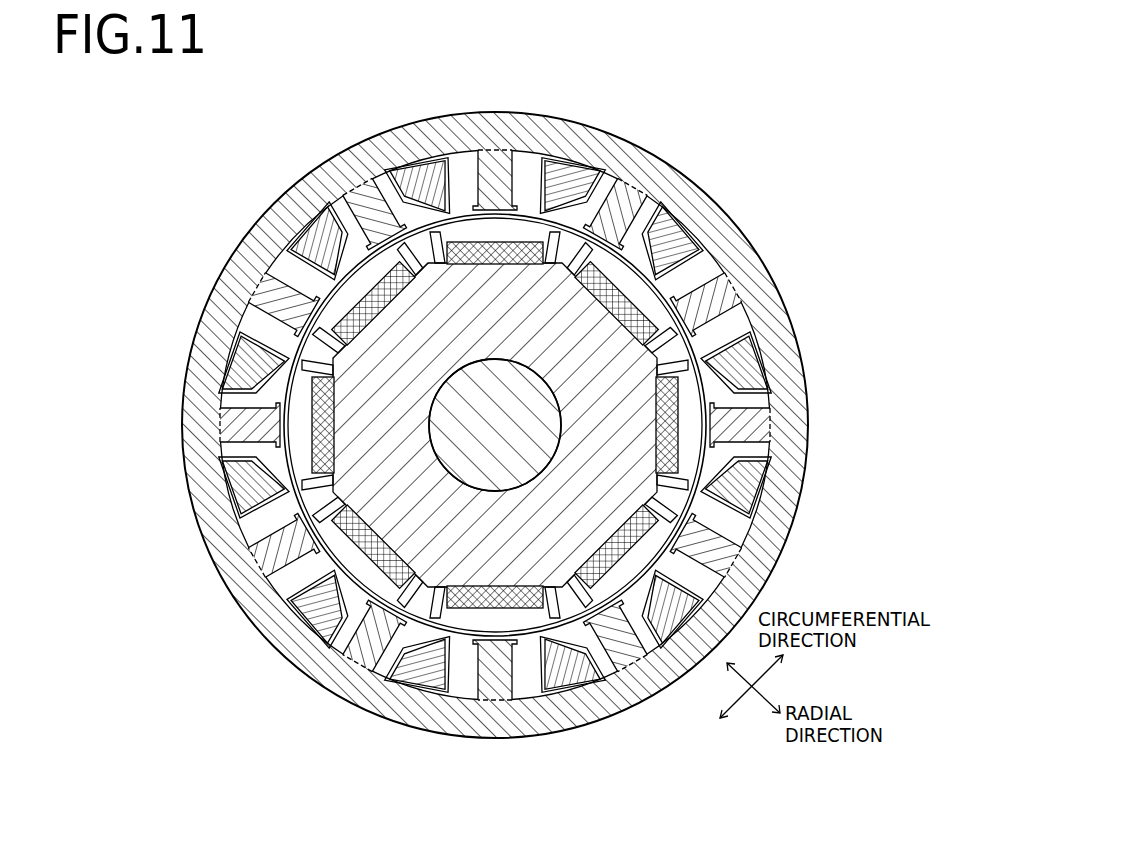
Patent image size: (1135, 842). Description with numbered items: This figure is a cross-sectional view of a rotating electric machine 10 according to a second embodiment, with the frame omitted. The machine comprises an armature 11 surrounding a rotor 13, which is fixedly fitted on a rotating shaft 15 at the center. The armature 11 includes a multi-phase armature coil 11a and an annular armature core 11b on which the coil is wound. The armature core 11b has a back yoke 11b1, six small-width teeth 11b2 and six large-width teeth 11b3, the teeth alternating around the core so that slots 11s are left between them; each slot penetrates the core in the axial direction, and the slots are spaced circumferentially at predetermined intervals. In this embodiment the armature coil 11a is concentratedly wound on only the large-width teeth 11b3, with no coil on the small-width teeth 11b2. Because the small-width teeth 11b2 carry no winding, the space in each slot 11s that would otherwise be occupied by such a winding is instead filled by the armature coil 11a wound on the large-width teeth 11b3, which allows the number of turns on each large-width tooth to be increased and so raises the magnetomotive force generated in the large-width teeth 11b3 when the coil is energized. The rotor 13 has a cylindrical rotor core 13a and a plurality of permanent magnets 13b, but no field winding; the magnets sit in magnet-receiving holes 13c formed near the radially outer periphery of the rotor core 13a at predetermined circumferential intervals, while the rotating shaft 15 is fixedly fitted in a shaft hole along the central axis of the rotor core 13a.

The rotating electric machine 10 is at (494, 404).
The armature 11 is at (494, 402).
The armature coil 11a is at (412, 180).
The armature core 11b is at (494, 402).
The back yoke 11b1 is at (568, 138).
The small-width teeth 11b2 is at (490, 172).
The large-width teeth 11b3 is at (372, 182).
The slots 11s is at (534, 424).
The rotor 13 is at (513, 478).
The rotor core 13a is at (378, 447).
The permanent magnets 13b is at (357, 320).
The magnet-receiving holes 13c is at (687, 345).
The rotating shaft 15 is at (493, 445).